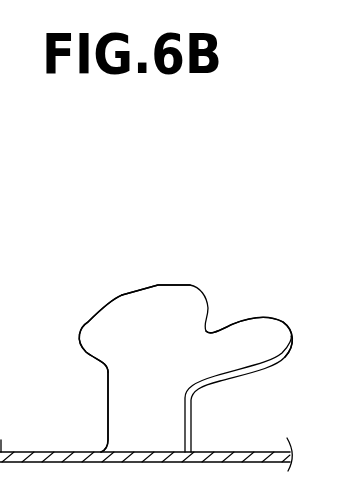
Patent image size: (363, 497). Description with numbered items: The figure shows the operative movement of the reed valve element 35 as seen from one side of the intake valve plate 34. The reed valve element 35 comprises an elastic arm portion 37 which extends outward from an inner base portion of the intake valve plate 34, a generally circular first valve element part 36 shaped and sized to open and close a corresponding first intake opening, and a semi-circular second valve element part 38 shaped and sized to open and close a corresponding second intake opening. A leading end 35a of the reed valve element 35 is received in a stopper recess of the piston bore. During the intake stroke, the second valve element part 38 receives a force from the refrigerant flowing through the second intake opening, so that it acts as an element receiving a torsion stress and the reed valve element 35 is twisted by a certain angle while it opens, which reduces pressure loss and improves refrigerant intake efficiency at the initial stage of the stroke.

The intake valve plate 34 is at (250, 448).
The reed valve element 35 is at (203, 274).
The leading end 35a is at (142, 286).
The first valve element part 36 is at (88, 322).
The elastic arm portion 37 is at (108, 411).
The second valve element part 38 is at (273, 338).